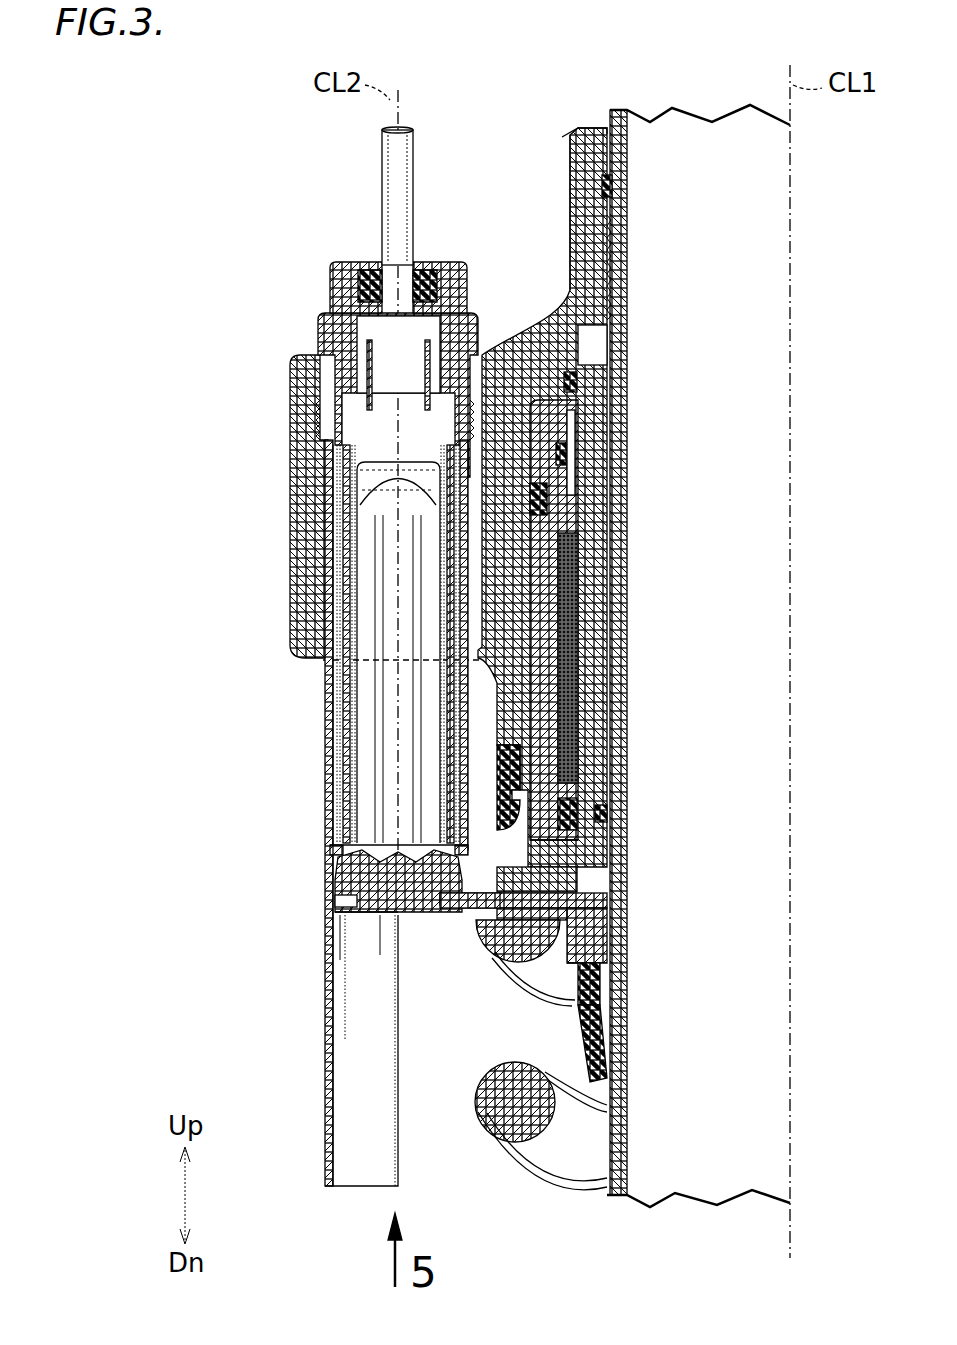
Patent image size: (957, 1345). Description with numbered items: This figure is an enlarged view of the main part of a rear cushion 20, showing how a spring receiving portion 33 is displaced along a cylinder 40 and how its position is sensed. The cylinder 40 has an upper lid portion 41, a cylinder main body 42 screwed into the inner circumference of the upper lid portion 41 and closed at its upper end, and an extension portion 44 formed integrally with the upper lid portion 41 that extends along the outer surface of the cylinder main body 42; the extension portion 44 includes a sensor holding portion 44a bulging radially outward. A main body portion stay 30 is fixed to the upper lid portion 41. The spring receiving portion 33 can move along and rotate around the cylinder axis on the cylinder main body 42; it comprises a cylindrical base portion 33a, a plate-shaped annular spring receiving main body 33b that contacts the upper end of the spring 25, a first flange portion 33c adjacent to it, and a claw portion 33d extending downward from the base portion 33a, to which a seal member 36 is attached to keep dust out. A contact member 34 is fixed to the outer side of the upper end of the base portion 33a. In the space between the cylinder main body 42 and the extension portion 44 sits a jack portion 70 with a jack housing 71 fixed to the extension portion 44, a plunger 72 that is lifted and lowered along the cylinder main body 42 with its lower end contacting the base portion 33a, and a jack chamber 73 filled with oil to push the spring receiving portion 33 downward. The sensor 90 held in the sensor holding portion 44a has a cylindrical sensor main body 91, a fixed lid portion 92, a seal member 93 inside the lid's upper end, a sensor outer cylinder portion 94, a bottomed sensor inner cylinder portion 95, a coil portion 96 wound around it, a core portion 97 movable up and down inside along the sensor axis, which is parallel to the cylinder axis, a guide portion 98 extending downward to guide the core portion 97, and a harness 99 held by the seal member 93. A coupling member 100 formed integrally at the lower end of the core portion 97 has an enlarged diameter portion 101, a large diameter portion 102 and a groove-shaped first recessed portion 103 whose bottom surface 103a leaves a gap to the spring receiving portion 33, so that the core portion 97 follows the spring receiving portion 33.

The valve device 20 is at (198, 180).
The spring 25 is at (548, 1178).
The housing body 30 is at (522, 132).
The spring receiving portion 33 is at (709, 893).
The base portion 33a is at (600, 985).
The spring receiving main body 33b is at (590, 950).
The first flange portion 33c is at (560, 906).
The claw portion 33d is at (600, 1050).
The contact member 34 is at (520, 860).
The seal member 36 is at (578, 1068).
The cylinder 40 is at (712, 160).
The upper lid portion 41 is at (578, 242).
The cylinder main body 42 is at (627, 150).
The extension portion 44 is at (545, 300).
The sensor holding portion 44a is at (290, 440).
The jack portion 70 is at (709, 543).
The jack housing 71 is at (560, 668).
The plunger 72 is at (600, 626).
The jack chamber 73 is at (565, 570).
The sensor 90 is at (330, 252).
The sensor main body 91 is at (323, 497).
The fixed lid portion 92 is at (333, 278).
The seal member 93 is at (418, 265).
The sensor outer cylinder portion 94 is at (320, 420).
The sensor inner cylinder portion 95 is at (352, 712).
The coil portion 96 is at (350, 575).
The core portion 97 is at (378, 767).
The guide portion 98 is at (325, 1082).
The harness 99 is at (382, 165).
The coupling member 100 is at (241, 840).
The enlarged diameter portion 101 is at (340, 858).
The large diameter portion 102 is at (345, 915).
The first recessed portion 103 is at (345, 900).
The bottom surface 103a is at (455, 910).